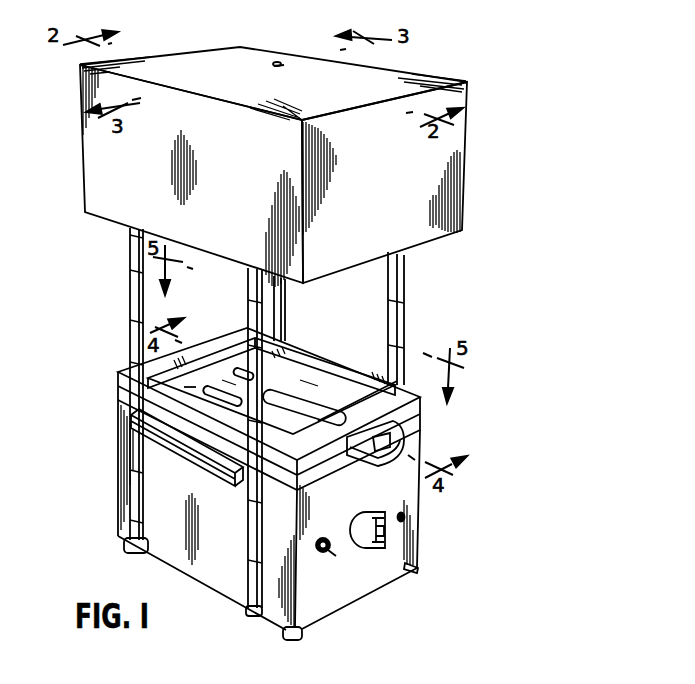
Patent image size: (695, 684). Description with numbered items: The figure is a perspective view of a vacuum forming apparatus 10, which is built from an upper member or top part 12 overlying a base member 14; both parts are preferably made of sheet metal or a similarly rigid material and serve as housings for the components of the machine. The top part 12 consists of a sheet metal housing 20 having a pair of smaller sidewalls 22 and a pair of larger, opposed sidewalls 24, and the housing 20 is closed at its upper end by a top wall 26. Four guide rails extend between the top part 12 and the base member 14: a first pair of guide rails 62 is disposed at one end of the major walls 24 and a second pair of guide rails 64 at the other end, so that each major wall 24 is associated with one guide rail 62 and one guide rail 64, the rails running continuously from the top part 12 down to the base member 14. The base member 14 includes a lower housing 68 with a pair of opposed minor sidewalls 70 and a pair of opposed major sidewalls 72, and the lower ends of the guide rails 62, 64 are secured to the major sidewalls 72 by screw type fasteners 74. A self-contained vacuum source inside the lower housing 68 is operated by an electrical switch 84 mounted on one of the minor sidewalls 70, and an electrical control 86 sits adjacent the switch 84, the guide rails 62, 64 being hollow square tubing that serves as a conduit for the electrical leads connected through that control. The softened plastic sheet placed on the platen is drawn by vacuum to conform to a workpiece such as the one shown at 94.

The vacuum forming apparatus 10 is at (432, 50).
The top part 12 is at (483, 141).
The base member 14 is at (447, 513).
The sheet metal housing 20 is at (463, 188).
The smaller sidewalls 22 is at (385, 197).
The larger opposed sidewalls 24 is at (241, 187).
The top wall 26 is at (281, 64).
The first pair of guide rails 62 is at (249, 291).
The second pair of guide rails 64 is at (129, 289).
The lower housing 68 is at (368, 606).
The minor sidewalls 70 is at (347, 586).
The major sidewalls 72 is at (229, 502).
The screw type fasteners 74 is at (148, 512).
The electrical switch 84 is at (322, 538).
The electrical control 86 is at (368, 512).
The workpiece 94 is at (280, 412).